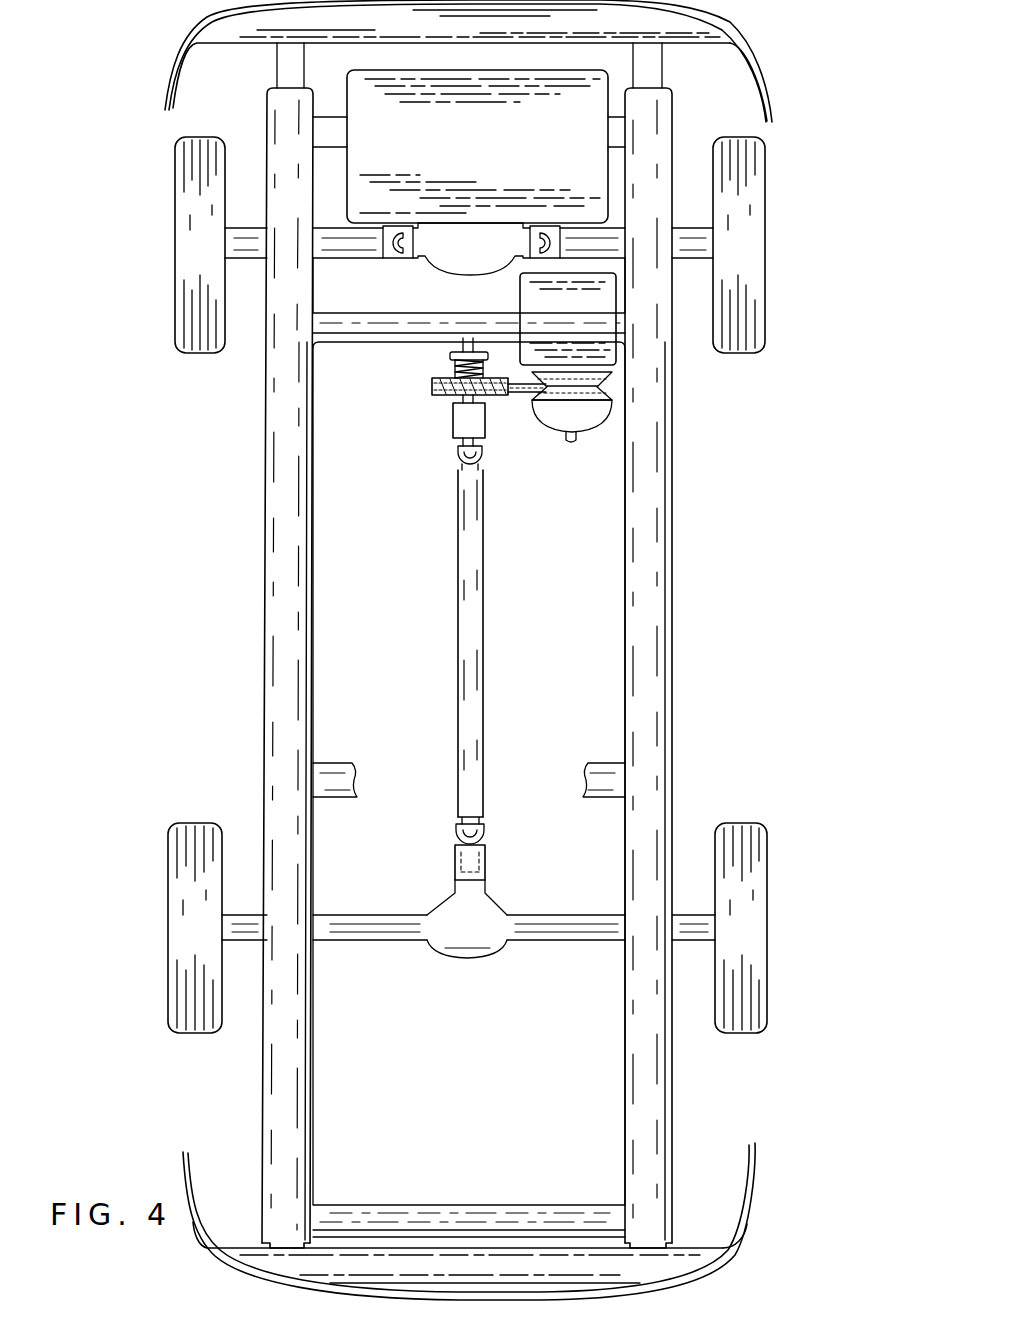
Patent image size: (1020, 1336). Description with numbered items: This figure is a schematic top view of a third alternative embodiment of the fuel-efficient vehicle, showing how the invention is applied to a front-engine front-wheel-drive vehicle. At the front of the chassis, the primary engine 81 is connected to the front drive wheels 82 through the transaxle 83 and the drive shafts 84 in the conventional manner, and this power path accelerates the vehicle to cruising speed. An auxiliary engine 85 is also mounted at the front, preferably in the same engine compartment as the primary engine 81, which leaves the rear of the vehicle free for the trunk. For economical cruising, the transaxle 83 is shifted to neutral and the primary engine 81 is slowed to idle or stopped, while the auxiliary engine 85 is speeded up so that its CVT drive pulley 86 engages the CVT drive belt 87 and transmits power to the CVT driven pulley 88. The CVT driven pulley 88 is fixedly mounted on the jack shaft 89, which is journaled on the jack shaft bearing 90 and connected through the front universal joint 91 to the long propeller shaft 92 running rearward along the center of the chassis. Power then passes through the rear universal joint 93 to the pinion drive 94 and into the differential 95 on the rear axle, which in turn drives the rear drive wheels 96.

The primary engine 81 is at (478, 168).
The front drive wheels 82 is at (175, 183).
The transaxle 83 is at (488, 261).
The drive shafts 84 is at (340, 253).
The auxiliary engine 85 is at (583, 328).
The CVT drive pulley 86 is at (604, 412).
The CVT drive belt 87 is at (525, 395).
The CVT driven pulley 88 is at (432, 393).
The jack shaft 89 is at (467, 338).
The jack shaft bearing 90 is at (452, 420).
The front universal joint 91 is at (455, 458).
The propeller shaft 92 is at (484, 634).
The rear universal joint 93 is at (484, 828).
The pinion drive 94 is at (486, 845).
The differential 95 is at (488, 931).
The rear drive wheels 96 is at (168, 915).